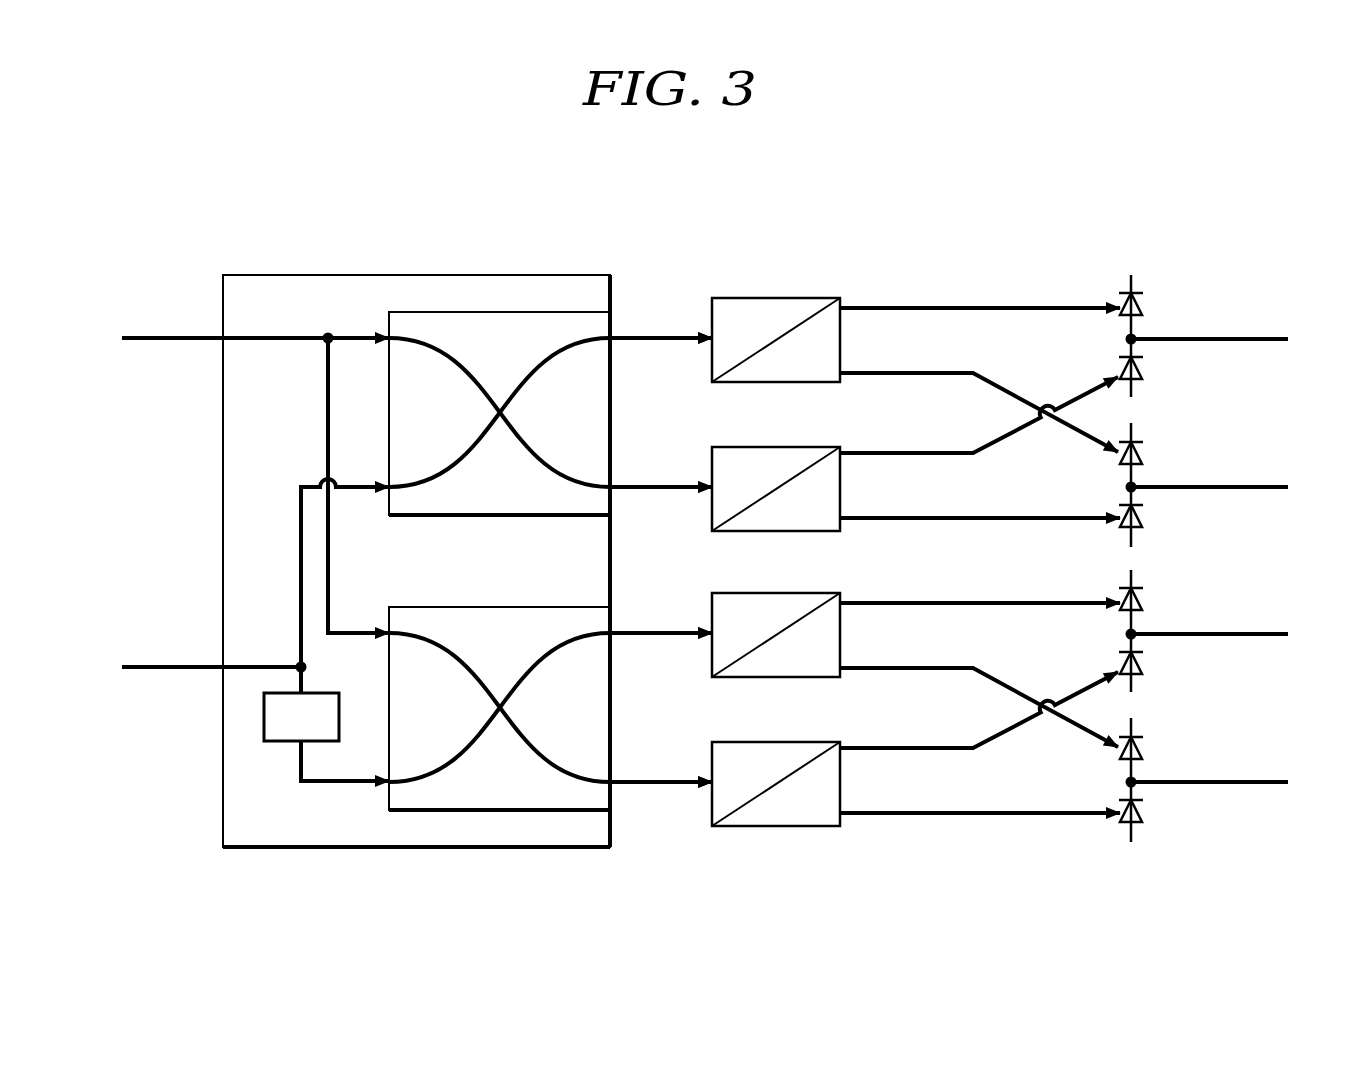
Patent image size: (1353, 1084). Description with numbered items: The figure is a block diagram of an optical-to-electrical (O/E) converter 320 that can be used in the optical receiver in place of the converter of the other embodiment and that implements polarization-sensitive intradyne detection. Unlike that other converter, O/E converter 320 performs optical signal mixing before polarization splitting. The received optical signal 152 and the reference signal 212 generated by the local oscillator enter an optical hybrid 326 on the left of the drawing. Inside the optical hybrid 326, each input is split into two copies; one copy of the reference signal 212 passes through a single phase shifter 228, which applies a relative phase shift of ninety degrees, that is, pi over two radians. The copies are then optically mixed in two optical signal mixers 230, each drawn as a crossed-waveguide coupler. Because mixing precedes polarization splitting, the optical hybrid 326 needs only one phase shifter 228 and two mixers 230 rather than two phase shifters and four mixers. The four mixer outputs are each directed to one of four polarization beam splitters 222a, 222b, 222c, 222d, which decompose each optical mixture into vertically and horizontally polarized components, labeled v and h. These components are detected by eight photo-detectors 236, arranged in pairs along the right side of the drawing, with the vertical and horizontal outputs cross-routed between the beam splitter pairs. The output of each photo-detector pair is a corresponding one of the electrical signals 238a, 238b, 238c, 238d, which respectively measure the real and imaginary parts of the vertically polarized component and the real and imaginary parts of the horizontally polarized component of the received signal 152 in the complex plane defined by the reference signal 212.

The O/E converter 320 is at (690, 166).
The optical hybrid 326 is at (400, 275).
The optical signal 152 is at (170, 336).
The reference signal 212 is at (170, 665).
The phase shifter 228 is at (318, 693).
The optical signal mixer 230 is at (520, 351).
The polarization beam splitter 222a is at (750, 298).
The polarization beam splitter 222b is at (750, 447).
The polarization beam splitter 222c is at (750, 593).
The polarization beam splitter 222d is at (750, 742).
The photo-detectors 236 is at (1131, 232).
The electrical signal 238a is at (1178, 339).
The electrical signal 238b is at (1178, 487).
The electrical signal 238c is at (1178, 634).
The electrical signal 238d is at (1178, 782).